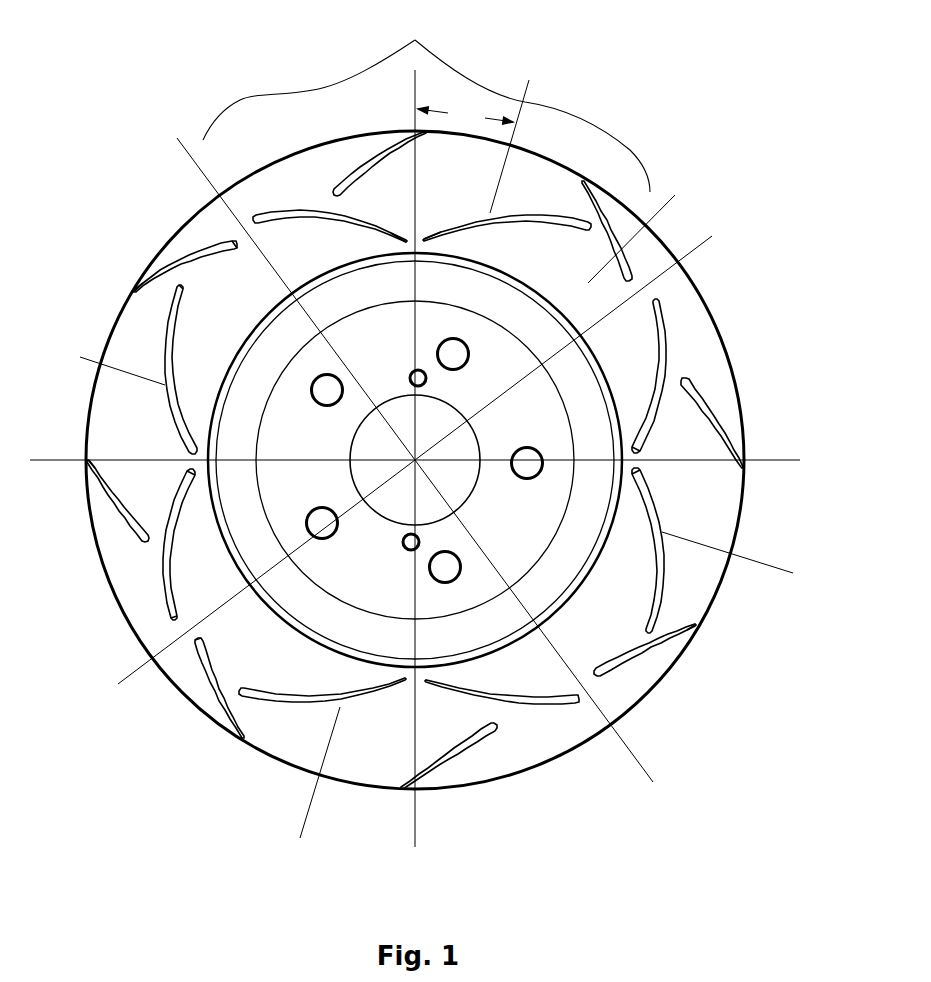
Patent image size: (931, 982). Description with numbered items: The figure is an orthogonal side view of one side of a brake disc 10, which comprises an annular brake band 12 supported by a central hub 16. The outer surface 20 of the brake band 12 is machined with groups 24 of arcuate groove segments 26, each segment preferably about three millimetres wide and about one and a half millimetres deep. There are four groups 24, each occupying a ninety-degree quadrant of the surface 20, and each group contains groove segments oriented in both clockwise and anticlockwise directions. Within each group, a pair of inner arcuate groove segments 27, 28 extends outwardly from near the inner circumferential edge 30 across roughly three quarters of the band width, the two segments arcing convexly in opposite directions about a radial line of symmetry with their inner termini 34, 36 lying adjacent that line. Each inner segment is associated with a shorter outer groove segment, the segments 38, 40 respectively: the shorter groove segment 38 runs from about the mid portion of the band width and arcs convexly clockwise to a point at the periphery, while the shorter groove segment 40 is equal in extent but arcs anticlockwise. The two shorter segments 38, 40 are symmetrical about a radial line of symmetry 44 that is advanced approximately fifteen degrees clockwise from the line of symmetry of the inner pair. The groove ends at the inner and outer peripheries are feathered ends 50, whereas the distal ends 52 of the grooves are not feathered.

The brake disc 10 is at (702, 122).
The brake band 12 is at (704, 297).
The central hub 16 is at (415, 460).
The outer surface of brake band 20 is at (415, 460).
The group of arcuate groove segments 24 is at (426, 101).
The arcuate groove segment 26 is at (182, 257).
The inner arcuate groove segment 27 is at (337, 222).
The inner arcuate groove segment 28 is at (512, 222).
The inner circumferential edge 30 is at (574, 601).
The inner terminus 34 is at (401, 236).
The inner terminus 36 is at (428, 236).
The shorter arcuate groove segment 38 is at (357, 173).
The shorter arcuate groove segment 40 is at (612, 237).
The radial line of symmetry 44 is at (529, 82).
The feathered ends 50 is at (134, 291).
The distal ends 52 is at (186, 297).